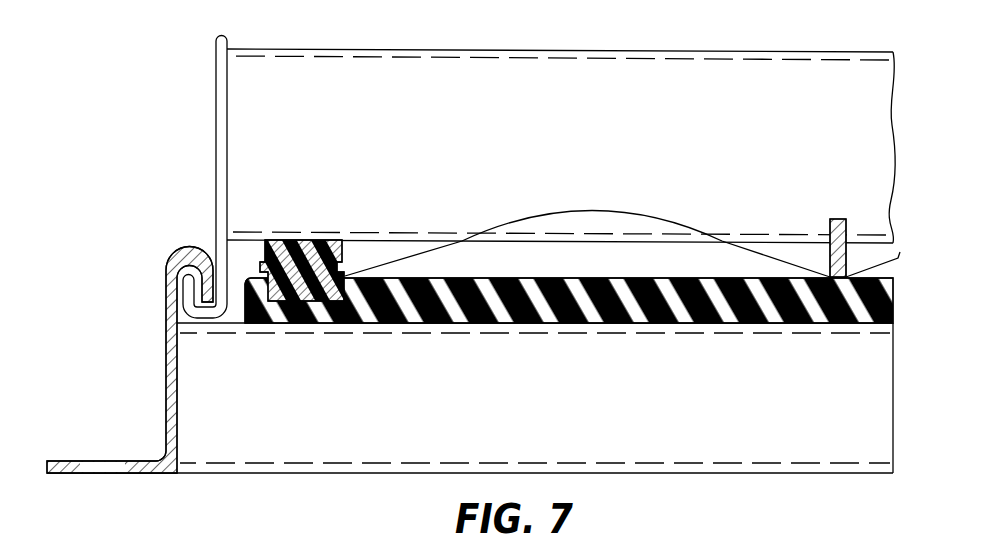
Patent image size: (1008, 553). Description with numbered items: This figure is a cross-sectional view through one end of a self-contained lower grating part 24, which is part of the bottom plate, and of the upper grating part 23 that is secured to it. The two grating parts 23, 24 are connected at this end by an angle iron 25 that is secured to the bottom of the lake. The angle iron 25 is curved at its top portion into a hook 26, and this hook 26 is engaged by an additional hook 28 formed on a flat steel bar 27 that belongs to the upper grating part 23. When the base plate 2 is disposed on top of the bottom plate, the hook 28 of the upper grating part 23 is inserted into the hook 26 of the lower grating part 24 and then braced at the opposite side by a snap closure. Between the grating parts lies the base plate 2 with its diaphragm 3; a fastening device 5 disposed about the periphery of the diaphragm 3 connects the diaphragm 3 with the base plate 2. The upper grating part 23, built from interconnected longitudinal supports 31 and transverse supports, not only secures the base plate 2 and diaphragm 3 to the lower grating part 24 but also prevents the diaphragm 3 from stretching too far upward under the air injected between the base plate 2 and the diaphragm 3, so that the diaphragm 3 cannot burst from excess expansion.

The base plate 2 is at (433, 318).
The diaphragm 3 is at (389, 262).
The fastening device 5 is at (298, 233).
The upper grating part 23 is at (645, 70).
The lower grating part 24 is at (347, 453).
The angle iron 25 is at (166, 386).
The hook 26 is at (181, 247).
The flat steel bar 27 is at (216, 97).
The hook 28 is at (177, 312).
The longitudinal support 31 is at (838, 219).